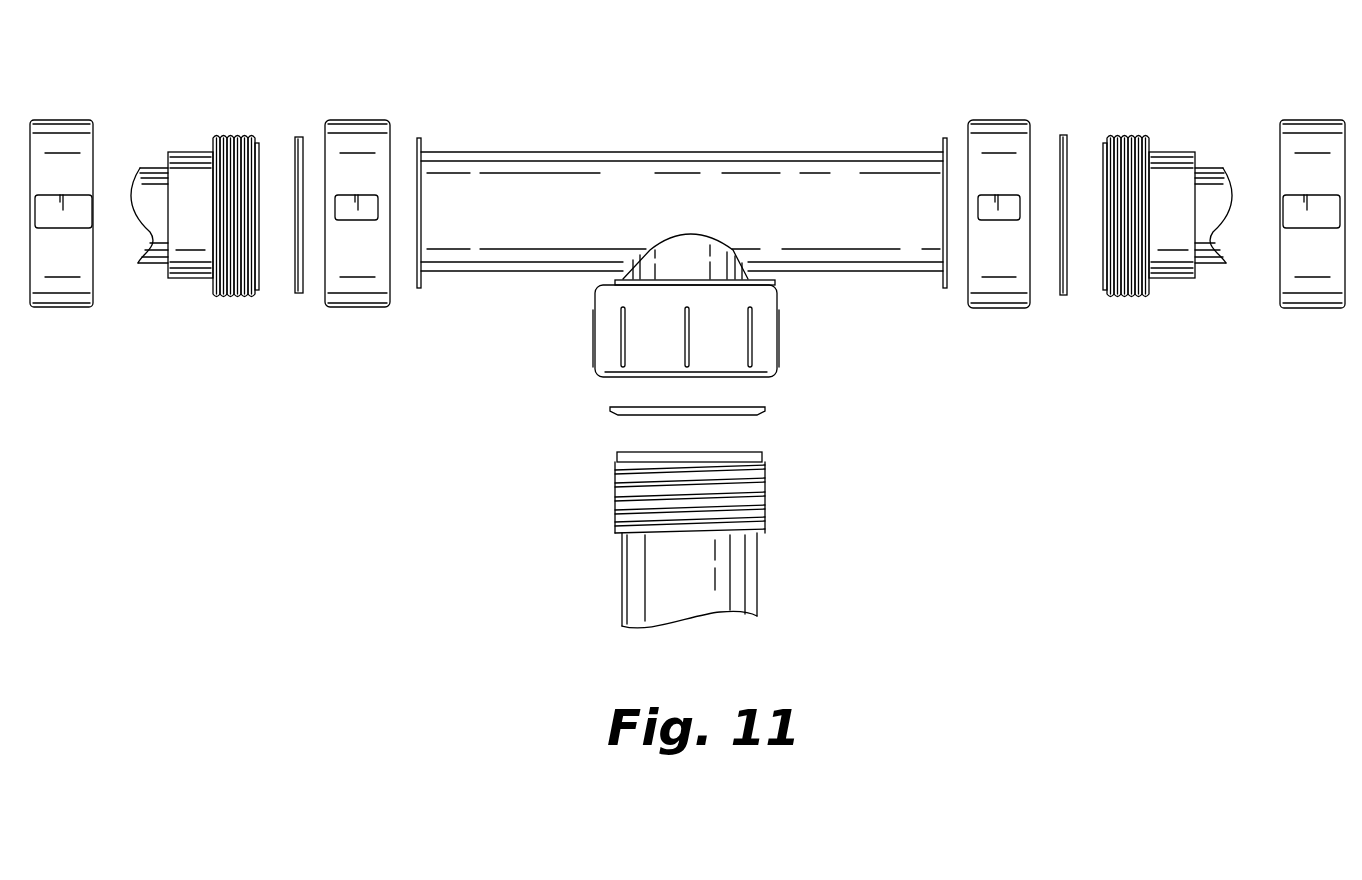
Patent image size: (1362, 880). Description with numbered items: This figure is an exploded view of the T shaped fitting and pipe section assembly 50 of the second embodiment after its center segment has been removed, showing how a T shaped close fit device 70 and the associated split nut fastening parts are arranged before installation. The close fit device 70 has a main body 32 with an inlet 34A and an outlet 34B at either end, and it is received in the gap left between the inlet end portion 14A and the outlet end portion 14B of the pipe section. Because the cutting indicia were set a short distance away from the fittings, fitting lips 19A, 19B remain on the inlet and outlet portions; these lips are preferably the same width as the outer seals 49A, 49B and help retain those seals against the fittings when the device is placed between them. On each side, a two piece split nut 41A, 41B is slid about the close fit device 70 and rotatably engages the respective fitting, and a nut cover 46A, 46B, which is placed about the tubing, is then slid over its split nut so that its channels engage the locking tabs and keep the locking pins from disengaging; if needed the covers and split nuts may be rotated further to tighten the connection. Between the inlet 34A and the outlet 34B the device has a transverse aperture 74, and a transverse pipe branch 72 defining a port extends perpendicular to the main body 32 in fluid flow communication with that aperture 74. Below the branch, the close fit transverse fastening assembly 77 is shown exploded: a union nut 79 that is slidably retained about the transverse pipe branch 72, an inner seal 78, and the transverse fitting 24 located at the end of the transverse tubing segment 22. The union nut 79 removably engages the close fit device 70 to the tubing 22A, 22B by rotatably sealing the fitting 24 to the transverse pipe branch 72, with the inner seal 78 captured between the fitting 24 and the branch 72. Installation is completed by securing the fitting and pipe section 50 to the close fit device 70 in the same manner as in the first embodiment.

The nut cover 46A is at (62, 130).
The inlet end portion 14A is at (190, 150).
The fitting lip 19A is at (258, 150).
The outer seal 49A is at (300, 136).
The split nut 41A is at (358, 120).
The tubing 22A is at (148, 266).
The inlet 34A is at (420, 286).
The T shaped close fit device 70 is at (634, 134).
The main body 32 is at (823, 152).
The transverse pipe branch 72 is at (702, 263).
The transverse aperture 74 is at (648, 253).
The union nut 79 is at (768, 312).
The close fit transverse fastening assembly 77 is at (770, 413).
The inner seal 78 is at (612, 413).
The transverse fitting 24 is at (762, 481).
The transverse tubing segment 22 is at (745, 572).
The split nut 41B is at (1000, 120).
The outer seal 49B is at (1063, 135).
The fitting lip 19B is at (1105, 150).
The outlet end portion 14B is at (1172, 150).
The tubing 22B is at (1218, 266).
The nut cover 46B is at (1300, 130).
The outlet 34B is at (947, 286).
The T shaped fitting and pipe section assembly 50 is at (1167, 314).